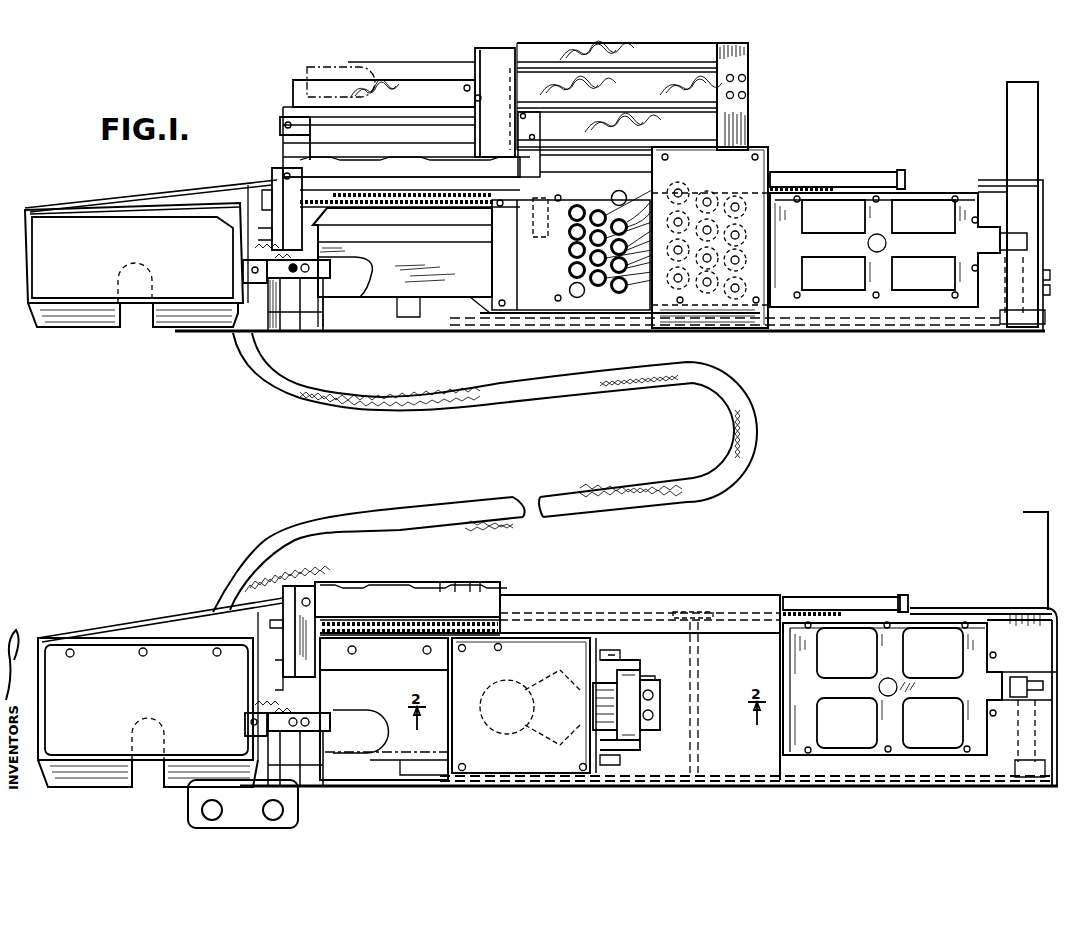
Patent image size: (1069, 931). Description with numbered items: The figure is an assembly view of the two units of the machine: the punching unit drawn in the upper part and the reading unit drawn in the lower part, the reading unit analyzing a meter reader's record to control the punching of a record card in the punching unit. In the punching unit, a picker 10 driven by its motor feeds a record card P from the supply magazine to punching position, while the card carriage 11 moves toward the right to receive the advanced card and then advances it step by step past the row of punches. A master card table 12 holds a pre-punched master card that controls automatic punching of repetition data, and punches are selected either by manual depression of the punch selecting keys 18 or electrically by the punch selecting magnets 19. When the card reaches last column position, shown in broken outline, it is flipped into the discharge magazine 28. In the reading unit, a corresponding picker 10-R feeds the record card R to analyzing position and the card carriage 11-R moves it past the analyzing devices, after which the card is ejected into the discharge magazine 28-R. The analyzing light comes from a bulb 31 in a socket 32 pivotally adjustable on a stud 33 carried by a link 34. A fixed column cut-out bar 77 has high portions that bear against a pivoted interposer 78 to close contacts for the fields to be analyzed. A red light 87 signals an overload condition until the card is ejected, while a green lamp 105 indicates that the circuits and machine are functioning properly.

The picker 10 is at (1003, 243).
The card carriage 11 is at (403, 187).
The master card table 12 is at (432, 123).
The punch selecting keys 18 is at (632, 288).
The punch selecting magnets 19 is at (745, 318).
The discharge magazine 28 is at (86, 303).
The record card P is at (378, 295).
The discharge magazine 28-R is at (103, 638).
The pivoted interposer 78 is at (297, 593).
The card carriage 11-R is at (343, 617).
The column cut-out bar 77 is at (427, 590).
The record card R is at (390, 750).
The picker 10-R is at (1012, 673).
The bulb 31 is at (566, 730).
The socket 32 is at (614, 725).
The stud 33 is at (653, 680).
The link 34 is at (655, 687).
The light 87 is at (210, 811).
The lamp 105 is at (277, 810).